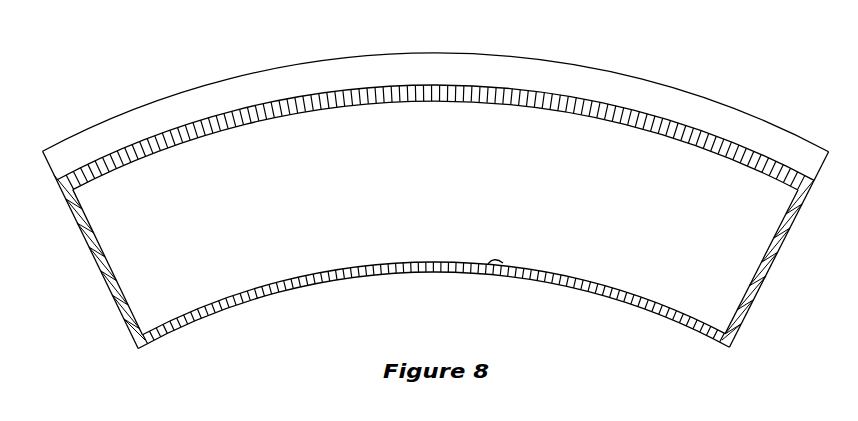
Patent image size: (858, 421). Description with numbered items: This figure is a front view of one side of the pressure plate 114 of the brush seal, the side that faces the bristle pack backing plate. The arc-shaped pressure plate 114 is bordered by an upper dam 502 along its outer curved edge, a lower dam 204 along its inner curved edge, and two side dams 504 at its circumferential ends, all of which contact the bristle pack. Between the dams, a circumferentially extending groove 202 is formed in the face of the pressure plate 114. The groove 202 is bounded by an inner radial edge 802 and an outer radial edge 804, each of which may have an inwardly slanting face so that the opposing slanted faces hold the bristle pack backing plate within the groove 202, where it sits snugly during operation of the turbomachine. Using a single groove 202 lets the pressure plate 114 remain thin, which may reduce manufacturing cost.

The pressure plate 114 is at (150, 88).
The upper dam 502 is at (496, 88).
The outer radial edge 804 is at (386, 104).
The circumferentially extending groove 202 is at (306, 250).
The inner radial edge 802 is at (503, 268).
The lower dam 204 is at (180, 332).
The side dams 504 is at (90, 243).